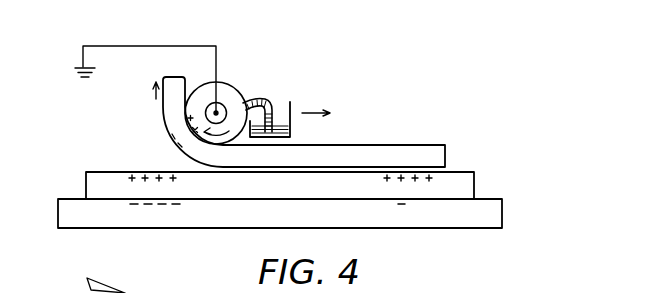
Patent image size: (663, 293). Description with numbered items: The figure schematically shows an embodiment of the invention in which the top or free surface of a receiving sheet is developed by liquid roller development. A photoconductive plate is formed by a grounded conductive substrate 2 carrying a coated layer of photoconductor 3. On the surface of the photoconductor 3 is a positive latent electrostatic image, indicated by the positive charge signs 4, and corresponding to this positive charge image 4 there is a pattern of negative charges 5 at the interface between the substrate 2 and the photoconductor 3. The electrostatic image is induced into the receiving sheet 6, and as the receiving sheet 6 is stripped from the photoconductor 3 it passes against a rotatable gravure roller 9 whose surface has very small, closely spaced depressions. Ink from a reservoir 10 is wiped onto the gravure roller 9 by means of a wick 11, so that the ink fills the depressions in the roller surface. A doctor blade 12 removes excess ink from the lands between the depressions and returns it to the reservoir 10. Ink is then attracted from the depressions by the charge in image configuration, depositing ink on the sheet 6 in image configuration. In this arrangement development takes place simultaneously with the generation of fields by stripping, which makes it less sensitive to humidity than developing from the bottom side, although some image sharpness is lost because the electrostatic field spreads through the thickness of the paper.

The grounded conductive substrate 2 is at (458, 229).
The photoconductor 3 is at (463, 172).
The positive charge image 4 is at (130, 178).
The negative charges 5 is at (147, 206).
The receiving sheet 6 is at (353, 145).
The gravure roller 9 is at (225, 81).
The reservoir 10 is at (292, 103).
The wick 11 is at (257, 101).
The doctor blade 12 is at (250, 139).